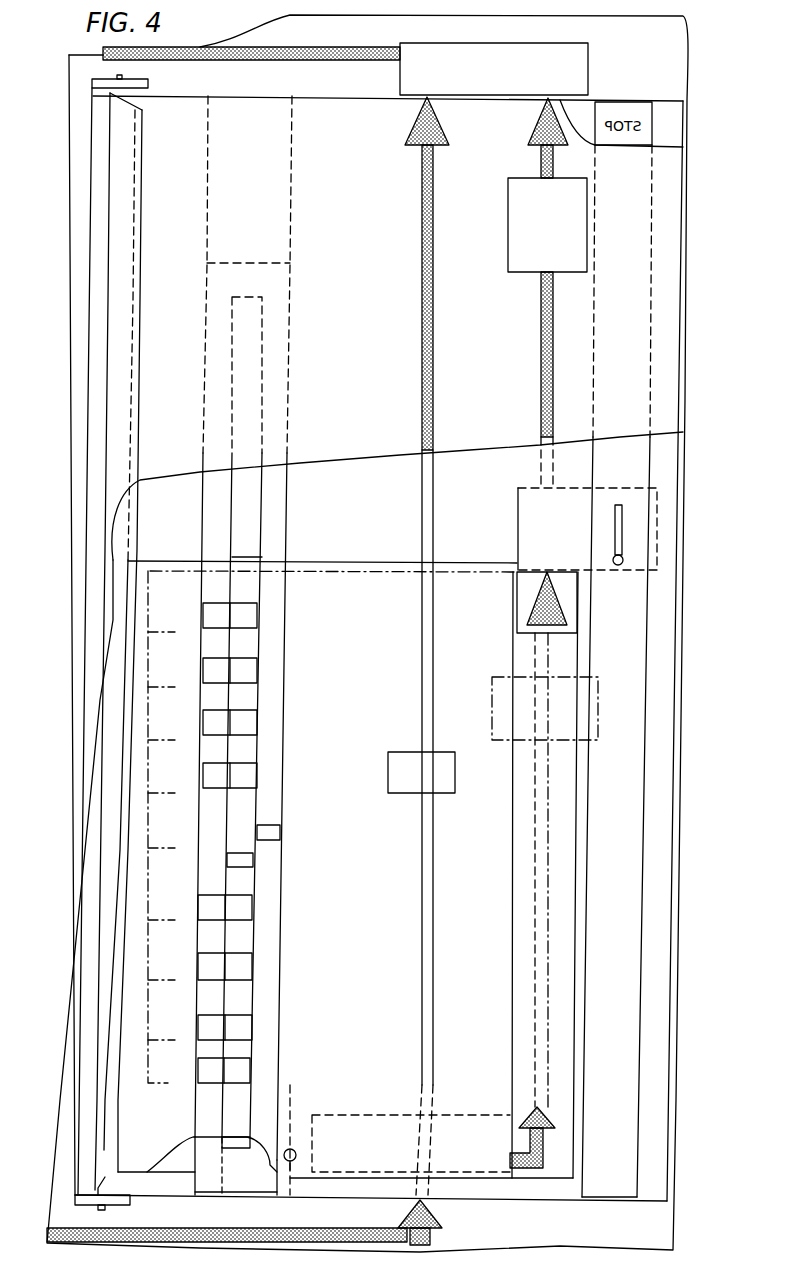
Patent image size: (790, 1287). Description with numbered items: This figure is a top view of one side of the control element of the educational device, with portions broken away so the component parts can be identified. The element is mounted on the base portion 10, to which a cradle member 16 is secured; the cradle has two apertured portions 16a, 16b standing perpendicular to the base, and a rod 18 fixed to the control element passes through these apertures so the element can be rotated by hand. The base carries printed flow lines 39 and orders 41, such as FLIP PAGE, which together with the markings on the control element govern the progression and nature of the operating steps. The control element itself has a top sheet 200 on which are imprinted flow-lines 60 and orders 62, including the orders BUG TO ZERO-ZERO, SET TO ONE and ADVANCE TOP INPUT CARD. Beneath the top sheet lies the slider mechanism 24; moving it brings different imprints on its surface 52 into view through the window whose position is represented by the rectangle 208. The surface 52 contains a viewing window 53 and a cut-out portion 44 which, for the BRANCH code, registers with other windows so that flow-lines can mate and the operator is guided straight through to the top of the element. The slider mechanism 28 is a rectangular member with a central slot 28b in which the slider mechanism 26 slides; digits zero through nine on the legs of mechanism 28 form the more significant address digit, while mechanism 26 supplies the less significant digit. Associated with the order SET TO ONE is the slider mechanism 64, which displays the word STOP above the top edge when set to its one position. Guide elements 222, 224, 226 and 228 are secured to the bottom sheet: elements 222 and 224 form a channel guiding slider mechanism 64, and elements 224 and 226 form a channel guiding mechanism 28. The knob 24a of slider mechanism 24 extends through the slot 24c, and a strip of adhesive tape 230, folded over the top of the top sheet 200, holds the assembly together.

The base portion 10 is at (623, 1222).
The cradle member 16 is at (83, 1177).
The apertured portion 16a is at (143, 86).
The apertured portion 16b is at (120, 1193).
The rod 18 is at (105, 1208).
The slider mechanism 24 is at (575, 966).
The knob 24a is at (287, 1200).
The slot 24c is at (295, 1100).
The slider mechanism 26 is at (245, 557).
The slider mechanism 28 is at (205, 1180).
The central slot 28b is at (240, 1148).
The flow lines 39 is at (305, 60).
The orders 41 is at (583, 58).
The cut-out portion 44 is at (455, 773).
The surface 52 is at (567, 868).
The viewing window 53 is at (282, 847).
The flow-lines 60 is at (420, 272).
The orders 62 is at (510, 180).
The slider mechanism 64 is at (633, 795).
The top sheet 200 is at (477, 444).
The rectangle 208 is at (335, 568).
The guide element 222 is at (645, 1117).
The guide element 224 is at (547, 1192).
The guide element 226 is at (160, 1183).
The guide element 228 is at (120, 1117).
The strip of adhesive tape 230 is at (120, 167).